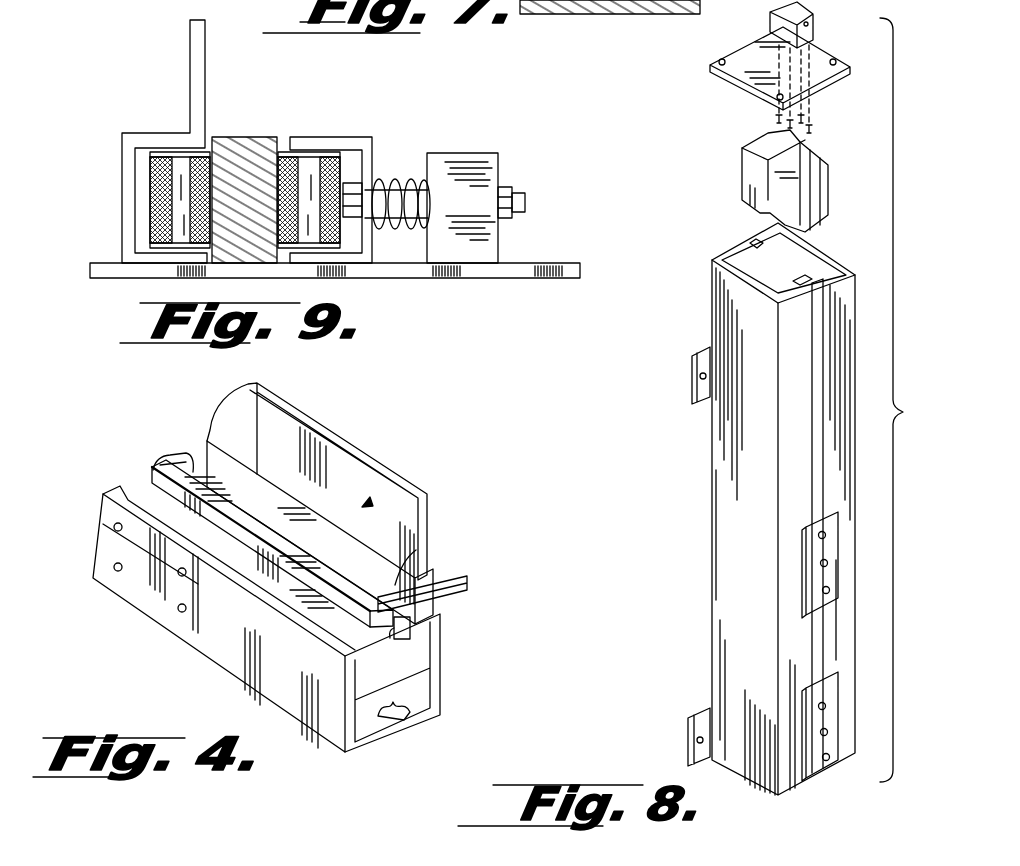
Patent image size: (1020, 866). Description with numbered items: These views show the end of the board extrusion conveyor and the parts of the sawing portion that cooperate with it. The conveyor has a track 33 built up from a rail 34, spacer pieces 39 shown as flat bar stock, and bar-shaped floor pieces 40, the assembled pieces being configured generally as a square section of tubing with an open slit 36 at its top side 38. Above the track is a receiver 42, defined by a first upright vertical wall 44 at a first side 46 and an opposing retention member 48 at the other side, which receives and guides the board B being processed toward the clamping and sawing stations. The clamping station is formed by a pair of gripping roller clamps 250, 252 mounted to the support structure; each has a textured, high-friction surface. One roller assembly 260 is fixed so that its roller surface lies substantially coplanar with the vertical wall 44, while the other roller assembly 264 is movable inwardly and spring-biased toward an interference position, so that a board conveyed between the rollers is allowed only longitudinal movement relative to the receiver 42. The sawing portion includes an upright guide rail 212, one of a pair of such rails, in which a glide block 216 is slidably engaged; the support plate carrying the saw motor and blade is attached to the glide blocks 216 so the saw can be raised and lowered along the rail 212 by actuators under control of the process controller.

In FIG. 9, the roller assembly 260 is at (140, 135).
In FIG. 9, the gripping roller clamp 252 is at (150, 170).
In FIG. 9, the board B is at (248, 137).
In FIG. 9, the gripping roller clamp 250 is at (340, 175).
In FIG. 9, the roller assembly 264 is at (448, 153).
In FIG. 8, the glide block 216 is at (742, 165).
In FIG. 8, the upright guide rail 212 is at (727, 476).
In FIG. 4, the retention member 48 is at (193, 472).
In FIG. 4, the first side 46 is at (300, 442).
In FIG. 4, the first upright vertical wall 44 is at (348, 470).
In FIG. 4, the receiver 42 is at (366, 505).
In FIG. 4, the track 33 is at (403, 568).
In FIG. 4, the floor piece 40 is at (322, 608).
In FIG. 4, the rail 34 is at (253, 672).
In FIG. 4, the spacer piece 39 is at (320, 684).
In FIG. 4, the top side 38 is at (440, 607).
In FIG. 4, the open slit 36 is at (403, 645).